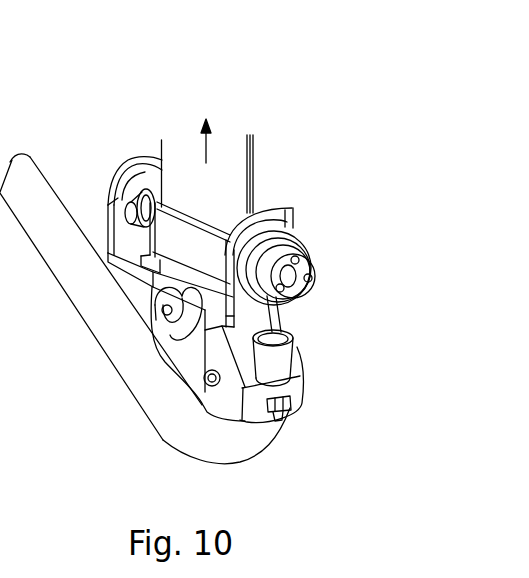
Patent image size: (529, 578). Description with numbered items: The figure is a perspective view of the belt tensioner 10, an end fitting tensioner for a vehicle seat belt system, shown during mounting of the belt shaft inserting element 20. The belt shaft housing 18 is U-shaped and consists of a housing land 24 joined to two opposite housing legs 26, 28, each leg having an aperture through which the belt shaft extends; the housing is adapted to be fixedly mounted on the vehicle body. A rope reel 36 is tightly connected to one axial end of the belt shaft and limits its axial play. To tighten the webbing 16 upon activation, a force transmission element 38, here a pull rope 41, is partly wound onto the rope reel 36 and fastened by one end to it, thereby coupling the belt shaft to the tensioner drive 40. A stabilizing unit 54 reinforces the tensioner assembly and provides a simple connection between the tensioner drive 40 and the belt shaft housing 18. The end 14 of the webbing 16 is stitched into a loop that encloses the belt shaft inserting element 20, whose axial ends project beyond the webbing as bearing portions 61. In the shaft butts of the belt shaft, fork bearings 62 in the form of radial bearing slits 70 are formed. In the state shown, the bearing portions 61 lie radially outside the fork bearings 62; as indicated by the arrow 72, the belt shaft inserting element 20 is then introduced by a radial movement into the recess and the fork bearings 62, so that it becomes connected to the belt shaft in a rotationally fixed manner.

The belt tensioner 10 is at (292, 94).
The arrow 72 is at (207, 147).
The belt shaft inserting element 20 is at (101, 297).
The bearing portions 61 is at (145, 247).
The belt shaft housing 18 is at (214, 272).
The housing leg 26 is at (157, 185).
The housing leg 28 is at (283, 222).
The housing land 24 is at (213, 302).
The fork bearing 62 is at (107, 171).
The radial bearing slits 70 is at (145, 203).
The webbing 16 is at (223, 178).
The rope reel 36 is at (305, 263).
The force transmission element 38 is at (322, 341).
The pull rope 41 is at (275, 319).
The end of the webbing 14 is at (188, 282).
The stabilizing unit 54 is at (310, 381).
The tensioner drive 40 is at (279, 459).